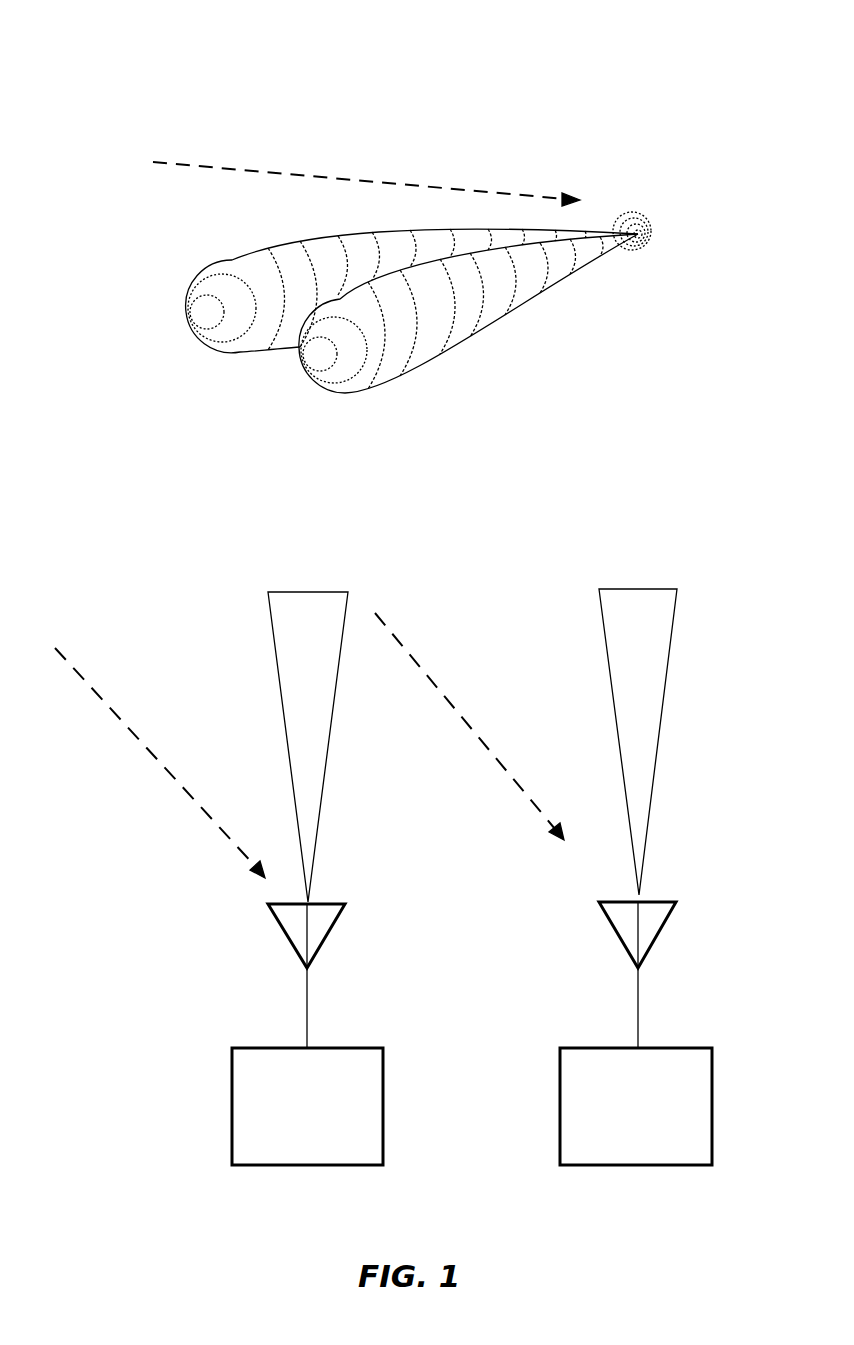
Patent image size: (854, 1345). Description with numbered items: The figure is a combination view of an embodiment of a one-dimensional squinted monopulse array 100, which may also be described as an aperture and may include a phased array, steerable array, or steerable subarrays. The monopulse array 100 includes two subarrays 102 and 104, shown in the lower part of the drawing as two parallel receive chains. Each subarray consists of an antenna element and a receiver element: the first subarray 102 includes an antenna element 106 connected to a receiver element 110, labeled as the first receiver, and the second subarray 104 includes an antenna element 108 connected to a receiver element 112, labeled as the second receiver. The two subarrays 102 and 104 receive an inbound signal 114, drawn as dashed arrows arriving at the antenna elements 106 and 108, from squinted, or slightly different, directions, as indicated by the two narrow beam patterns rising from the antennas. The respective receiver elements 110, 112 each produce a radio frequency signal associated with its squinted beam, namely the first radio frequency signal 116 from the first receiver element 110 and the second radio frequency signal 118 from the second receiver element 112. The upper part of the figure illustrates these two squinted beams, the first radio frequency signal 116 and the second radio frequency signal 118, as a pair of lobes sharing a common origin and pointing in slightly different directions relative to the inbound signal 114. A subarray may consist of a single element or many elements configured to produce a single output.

The one-dimensional monopulse array 100 is at (118, 65).
The subarray 102 is at (267, 1034).
The subarray 104 is at (641, 1033).
The antenna element 106 is at (287, 937).
The antenna element 108 is at (617, 937).
The receiver element 110 is at (288, 1146).
The receiver element 112 is at (617, 1146).
The inbound signal 114 is at (287, 172).
The radio frequency signal V1 116 is at (402, 365).
The radio frequency signal V2 118 is at (212, 278).